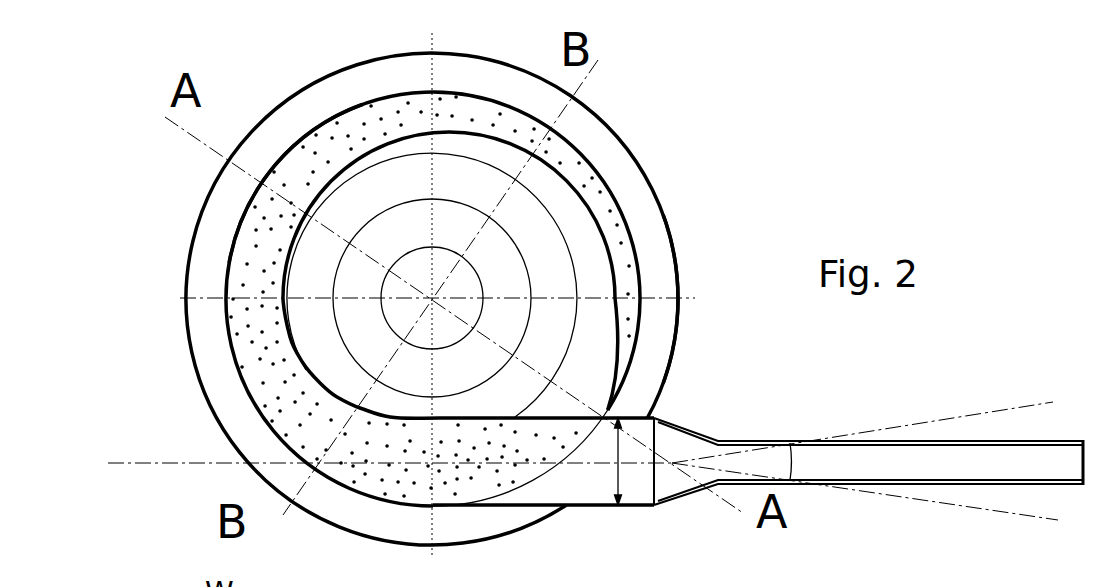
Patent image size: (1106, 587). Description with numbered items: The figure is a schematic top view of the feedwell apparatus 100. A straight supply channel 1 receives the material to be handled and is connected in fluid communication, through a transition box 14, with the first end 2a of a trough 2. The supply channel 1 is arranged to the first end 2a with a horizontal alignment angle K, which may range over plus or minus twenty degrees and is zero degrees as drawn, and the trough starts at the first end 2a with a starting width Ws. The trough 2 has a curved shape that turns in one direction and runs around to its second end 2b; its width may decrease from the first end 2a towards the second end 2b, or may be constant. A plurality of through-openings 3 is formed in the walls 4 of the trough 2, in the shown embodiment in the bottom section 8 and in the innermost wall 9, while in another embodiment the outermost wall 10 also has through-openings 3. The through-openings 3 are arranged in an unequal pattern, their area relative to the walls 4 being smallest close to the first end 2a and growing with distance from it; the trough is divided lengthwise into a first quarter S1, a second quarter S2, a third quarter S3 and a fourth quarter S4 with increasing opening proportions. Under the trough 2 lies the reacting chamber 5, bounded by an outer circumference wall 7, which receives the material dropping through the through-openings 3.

The supply channel 1 is at (874, 462).
The trough 2 is at (238, 325).
The first end 2a is at (492, 485).
The second end 2b is at (647, 363).
The through-openings 3 is at (242, 236).
The walls 4 is at (835, 581).
The reacting chamber 5 is at (553, 258).
The outer circumference wall 7 is at (197, 380).
The bottom section 8 is at (391, 468).
The innermost wall 9 is at (352, 157).
The outermost wall 10 is at (315, 127).
The transition box 14 is at (627, 480).
The feedwell apparatus 100 is at (835, 182).
The first quarter S1 is at (398, 528).
The second quarter S2 is at (210, 273).
The third quarter S3 is at (407, 80).
The fourth quarter S4 is at (647, 230).
The horizontal alignment angle K is at (865, 461).
The starting width Ws is at (600, 461).